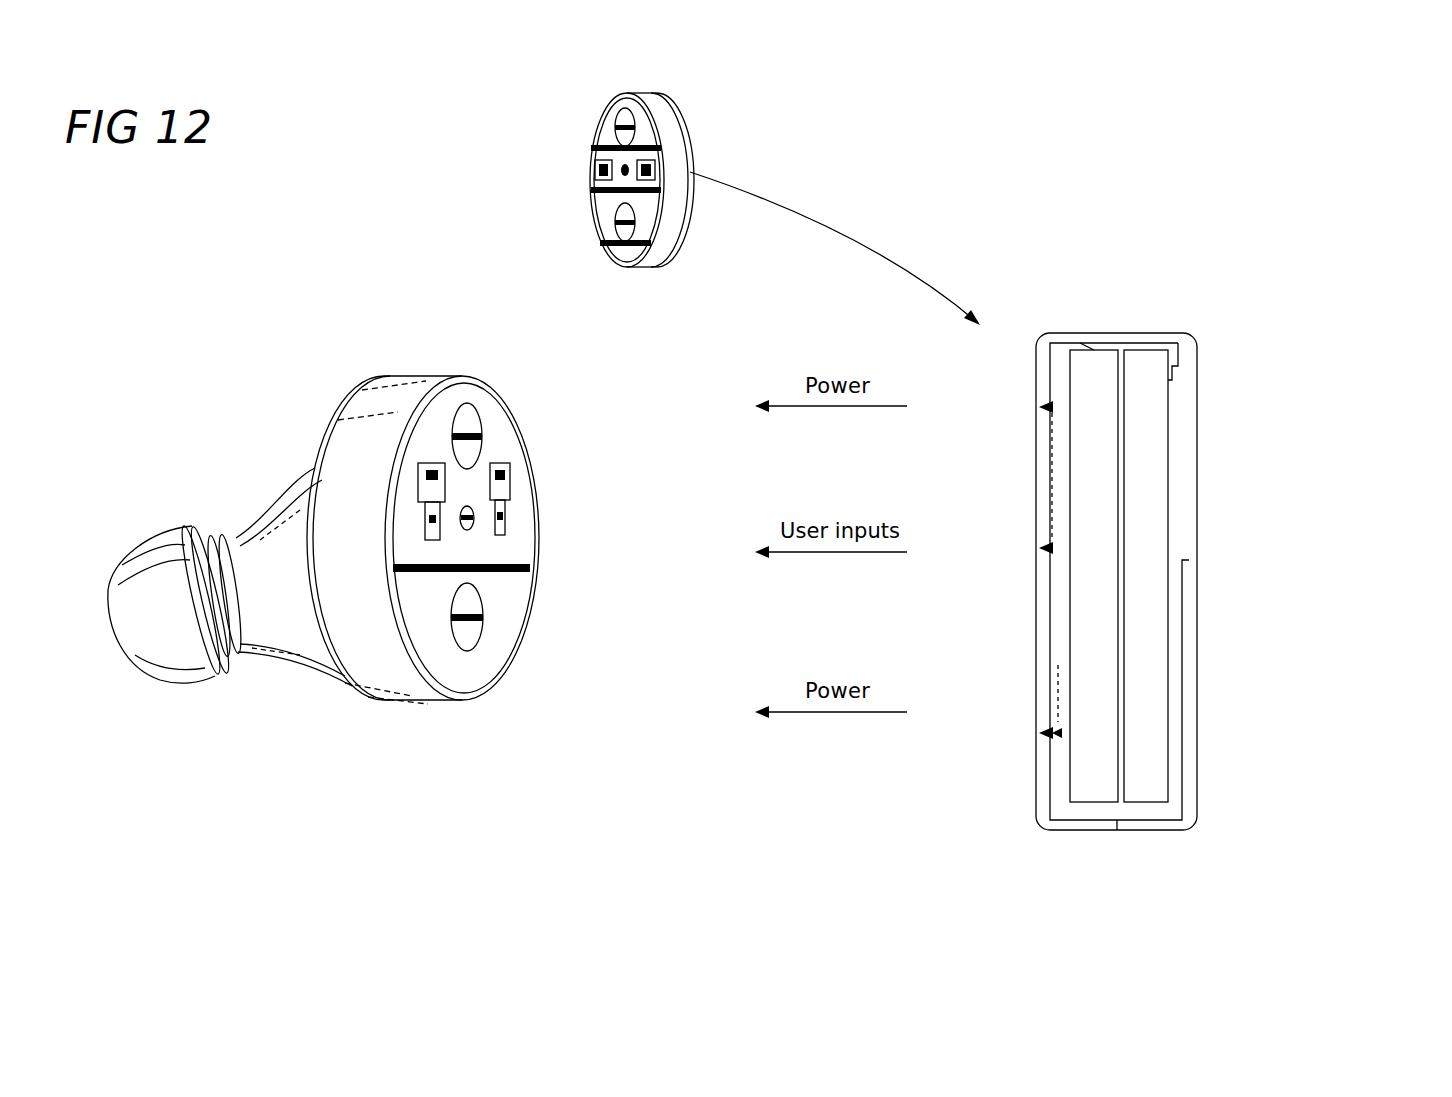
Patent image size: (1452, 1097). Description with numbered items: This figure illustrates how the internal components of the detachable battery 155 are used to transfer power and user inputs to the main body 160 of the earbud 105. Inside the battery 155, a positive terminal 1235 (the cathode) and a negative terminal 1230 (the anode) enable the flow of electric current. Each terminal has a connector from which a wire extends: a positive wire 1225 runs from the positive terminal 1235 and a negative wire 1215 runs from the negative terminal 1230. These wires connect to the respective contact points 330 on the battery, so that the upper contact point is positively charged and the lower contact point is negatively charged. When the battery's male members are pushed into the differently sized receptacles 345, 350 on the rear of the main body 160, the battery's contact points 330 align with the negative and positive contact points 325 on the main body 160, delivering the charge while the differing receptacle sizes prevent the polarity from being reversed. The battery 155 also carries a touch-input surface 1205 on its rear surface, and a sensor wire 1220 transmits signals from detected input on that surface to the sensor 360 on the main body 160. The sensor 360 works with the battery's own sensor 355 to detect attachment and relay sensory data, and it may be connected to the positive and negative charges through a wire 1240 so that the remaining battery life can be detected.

The earbud 105 is at (238, 402).
The detachable battery 155 is at (590, 122).
The main body 160 is at (284, 656).
The negative and positive contact points 325 is at (467, 415).
The negative and positive contact points 330 is at (1038, 409).
The receptacle 345 is at (431, 447).
The receptacle 350 is at (505, 445).
The sensor 355 is at (467, 527).
The sensor 360 is at (1040, 546).
The touch-input surface 1205 is at (1196, 422).
The negative wire 1215 is at (1058, 730).
The sensor wire 1220 is at (1117, 820).
The positive wire 1225 is at (1087, 347).
The negative terminal 1230 is at (1092, 453).
The positive terminal 1235 is at (1148, 485).
The wire 1240 is at (1050, 466).